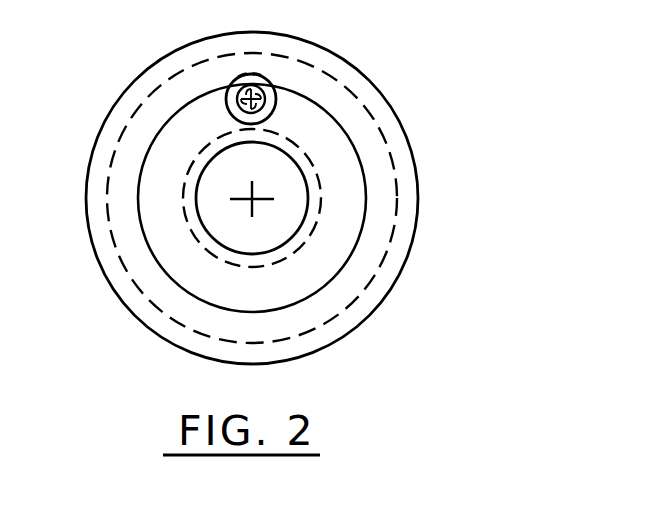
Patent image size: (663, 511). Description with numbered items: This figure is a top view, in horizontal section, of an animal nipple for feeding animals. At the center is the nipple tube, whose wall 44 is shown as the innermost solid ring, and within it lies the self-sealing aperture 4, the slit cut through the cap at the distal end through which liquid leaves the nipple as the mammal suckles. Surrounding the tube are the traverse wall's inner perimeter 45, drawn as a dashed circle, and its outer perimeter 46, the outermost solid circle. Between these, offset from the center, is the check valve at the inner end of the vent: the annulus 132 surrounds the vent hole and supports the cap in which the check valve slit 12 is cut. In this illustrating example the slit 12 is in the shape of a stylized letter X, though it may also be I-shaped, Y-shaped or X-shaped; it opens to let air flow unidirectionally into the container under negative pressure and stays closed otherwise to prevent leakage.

The self-sealing aperture 4 is at (248, 207).
The check valve slit 12 is at (238, 91).
The wall 44 is at (303, 216).
The inner perimeter 45 is at (316, 170).
The outer perimeter 46 is at (417, 164).
The annulus 132 is at (277, 101).